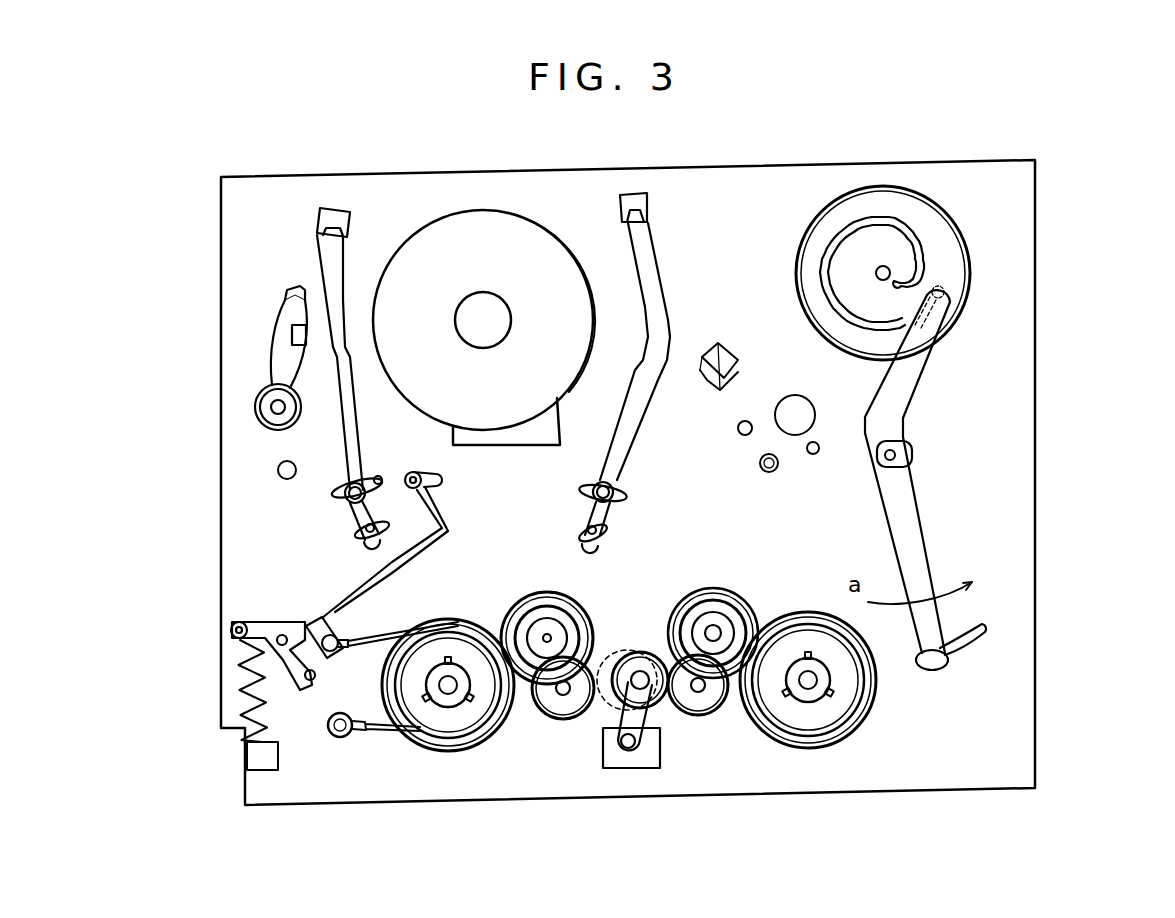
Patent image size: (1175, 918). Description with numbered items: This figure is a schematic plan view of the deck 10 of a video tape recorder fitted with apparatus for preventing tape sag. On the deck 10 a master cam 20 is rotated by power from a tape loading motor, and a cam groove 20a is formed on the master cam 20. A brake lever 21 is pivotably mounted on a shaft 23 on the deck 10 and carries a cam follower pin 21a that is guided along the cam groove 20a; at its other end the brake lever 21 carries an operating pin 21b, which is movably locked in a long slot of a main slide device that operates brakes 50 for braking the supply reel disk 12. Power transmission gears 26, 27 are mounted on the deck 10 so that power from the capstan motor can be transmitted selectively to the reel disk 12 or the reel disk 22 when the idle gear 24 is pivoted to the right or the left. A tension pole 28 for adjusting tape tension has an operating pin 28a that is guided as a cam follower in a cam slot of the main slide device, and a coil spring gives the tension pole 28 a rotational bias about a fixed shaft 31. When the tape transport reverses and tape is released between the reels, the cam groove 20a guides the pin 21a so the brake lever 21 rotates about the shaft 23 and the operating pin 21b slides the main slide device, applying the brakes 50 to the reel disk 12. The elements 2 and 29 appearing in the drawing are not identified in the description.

The deck 10 is at (1035, 450).
The tape reel 2 is at (522, 230).
The master cam 20 is at (907, 272).
The cam groove 20a is at (920, 235).
The brake lever 21 is at (940, 509).
The cam follower pin 21a is at (948, 302).
The operating pin 21b is at (928, 668).
The shaft 23 is at (903, 458).
The supply reel disk 12 is at (422, 722).
The idle gear 24 is at (640, 652).
The power transmission gear 26 is at (745, 610).
The power transmission gear 27 is at (708, 702).
The reel disk 22 is at (808, 705).
The tension pole 28 is at (358, 590).
The operating pin 28a is at (308, 690).
The fixed shaft 31 is at (283, 634).
The spring 29 is at (235, 683).
The brakes 50 is at (420, 728).